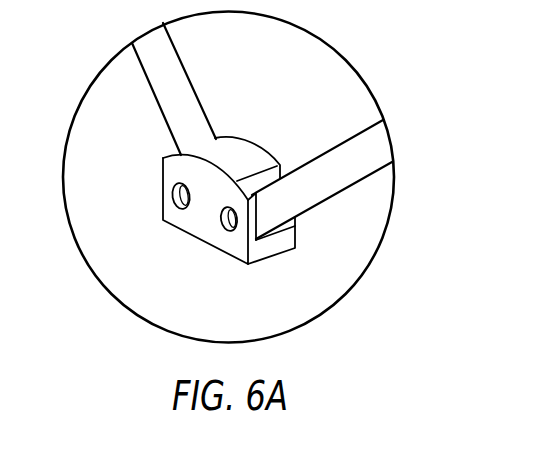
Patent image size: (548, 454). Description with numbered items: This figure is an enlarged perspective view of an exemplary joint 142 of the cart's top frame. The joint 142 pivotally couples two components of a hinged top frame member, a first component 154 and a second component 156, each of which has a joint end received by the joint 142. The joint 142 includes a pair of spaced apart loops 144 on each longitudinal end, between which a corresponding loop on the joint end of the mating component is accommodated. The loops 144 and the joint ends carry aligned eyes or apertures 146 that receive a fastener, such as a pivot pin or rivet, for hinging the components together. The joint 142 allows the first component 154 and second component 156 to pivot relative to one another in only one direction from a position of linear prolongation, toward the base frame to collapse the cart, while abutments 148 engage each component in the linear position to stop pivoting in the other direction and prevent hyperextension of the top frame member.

The joint 142 is at (272, 135).
The loops 144 is at (174, 153).
The apertures 146 is at (178, 191).
The abutments 148 is at (273, 228).
The first component 154 is at (372, 176).
The second component 156 is at (143, 68).